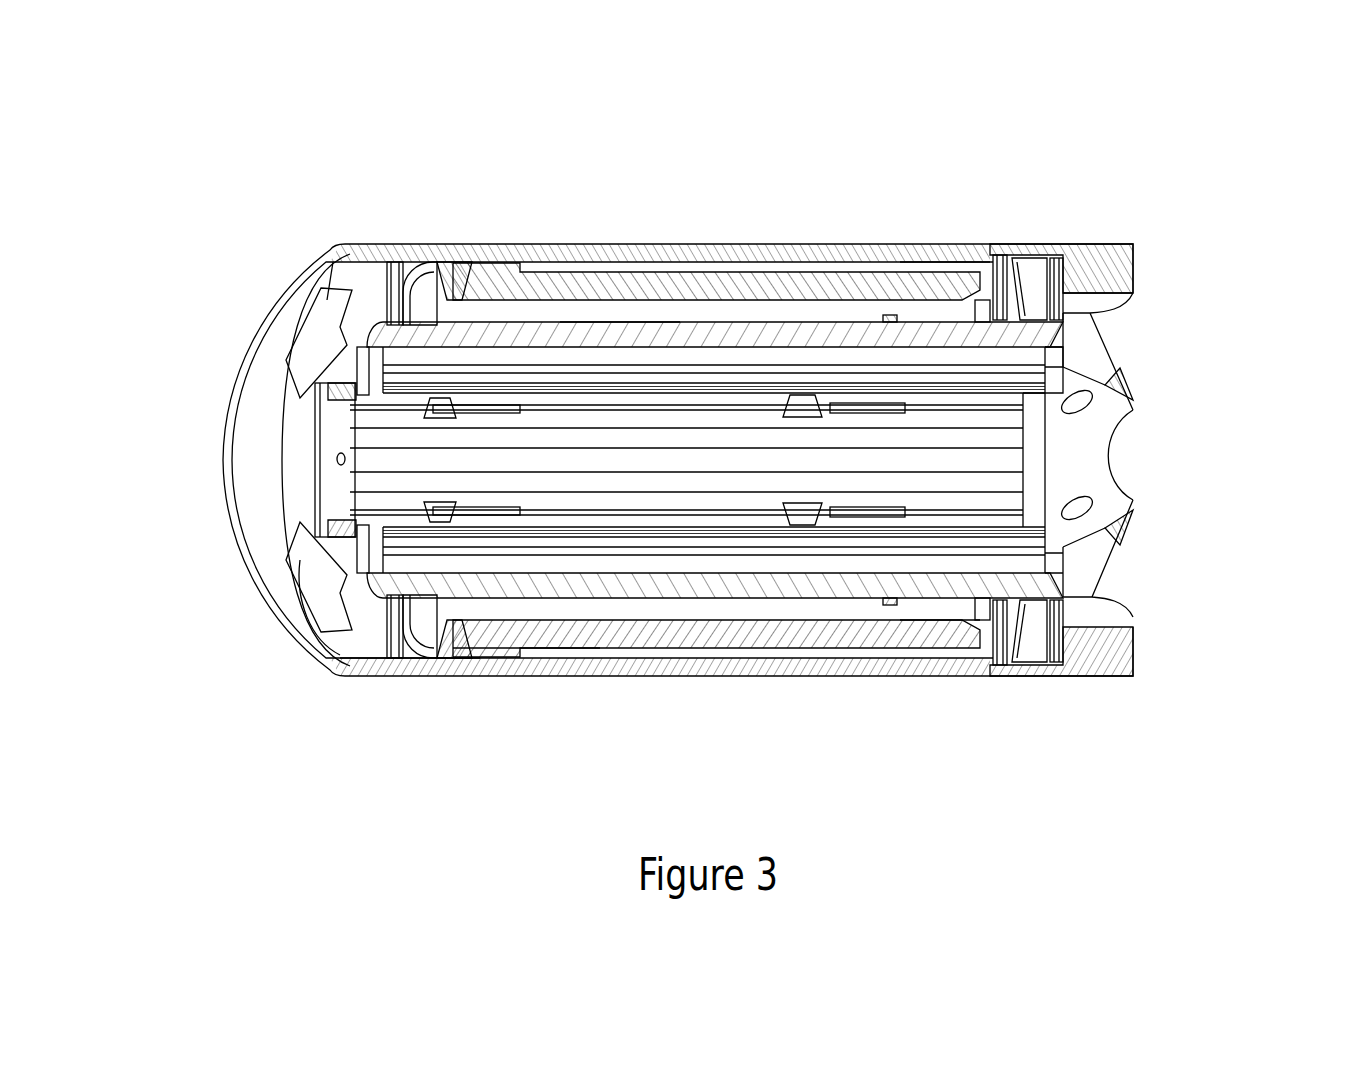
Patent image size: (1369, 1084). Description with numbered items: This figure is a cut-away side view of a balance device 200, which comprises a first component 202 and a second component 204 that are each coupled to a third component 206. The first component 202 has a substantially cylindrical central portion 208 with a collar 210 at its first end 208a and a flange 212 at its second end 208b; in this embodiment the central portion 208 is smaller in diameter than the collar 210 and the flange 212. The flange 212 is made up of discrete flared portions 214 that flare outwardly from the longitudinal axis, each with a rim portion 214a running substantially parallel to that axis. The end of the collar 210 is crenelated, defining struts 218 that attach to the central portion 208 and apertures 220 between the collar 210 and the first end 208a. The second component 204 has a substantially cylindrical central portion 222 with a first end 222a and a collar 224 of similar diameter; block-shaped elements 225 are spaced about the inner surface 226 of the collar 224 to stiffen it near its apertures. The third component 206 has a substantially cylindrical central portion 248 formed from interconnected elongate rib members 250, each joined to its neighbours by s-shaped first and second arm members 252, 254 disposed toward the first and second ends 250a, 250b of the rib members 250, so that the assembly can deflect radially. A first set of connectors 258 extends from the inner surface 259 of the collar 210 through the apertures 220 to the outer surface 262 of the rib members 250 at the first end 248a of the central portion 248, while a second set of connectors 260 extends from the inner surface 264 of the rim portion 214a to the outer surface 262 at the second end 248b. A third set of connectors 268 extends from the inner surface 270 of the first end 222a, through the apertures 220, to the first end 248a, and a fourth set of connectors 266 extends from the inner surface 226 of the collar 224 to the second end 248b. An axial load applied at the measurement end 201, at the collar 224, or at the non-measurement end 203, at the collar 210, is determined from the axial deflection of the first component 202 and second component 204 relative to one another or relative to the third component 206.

The balance device 200 is at (219, 157).
The measurement end 201 is at (200, 477).
The first component 202 is at (1140, 265).
The non-measurement end 203 is at (1228, 411).
The second component 204 is at (700, 230).
The third component 206 is at (312, 480).
The central portion 208 is at (652, 268).
The first end 208a is at (962, 640).
The second end 208b is at (530, 650).
The collar 210 is at (1140, 660).
The flange 212 is at (443, 680).
The flared portions 214 is at (463, 680).
The rim portion 214a is at (400, 667).
The struts 218 is at (1090, 352).
The apertures 220 is at (1000, 652).
The central portion 222 is at (580, 255).
The first end 222a is at (995, 262).
The collar 224 is at (228, 445).
The elements 225 is at (286, 345).
The inner surface 226 is at (295, 303).
The central portion 248 is at (616, 316).
The first end 248a is at (1068, 338).
The second end 248b is at (290, 297).
The rib members 250 is at (650, 525).
The first end 250a is at (835, 400).
The second end 250b is at (433, 410).
The first arm members 252 is at (263, 600).
The second arm members 254 is at (1105, 455).
The first set of connectors 258 is at (1058, 318).
The inner surface 259 is at (1030, 300).
The second set of connectors 260 is at (416, 275).
The outer surface 262 is at (1076, 293).
The inner surface 264 is at (400, 262).
The fourth set of connectors 266 is at (327, 300).
The third set of connectors 268 is at (985, 298).
The inner surface 270 is at (1000, 275).